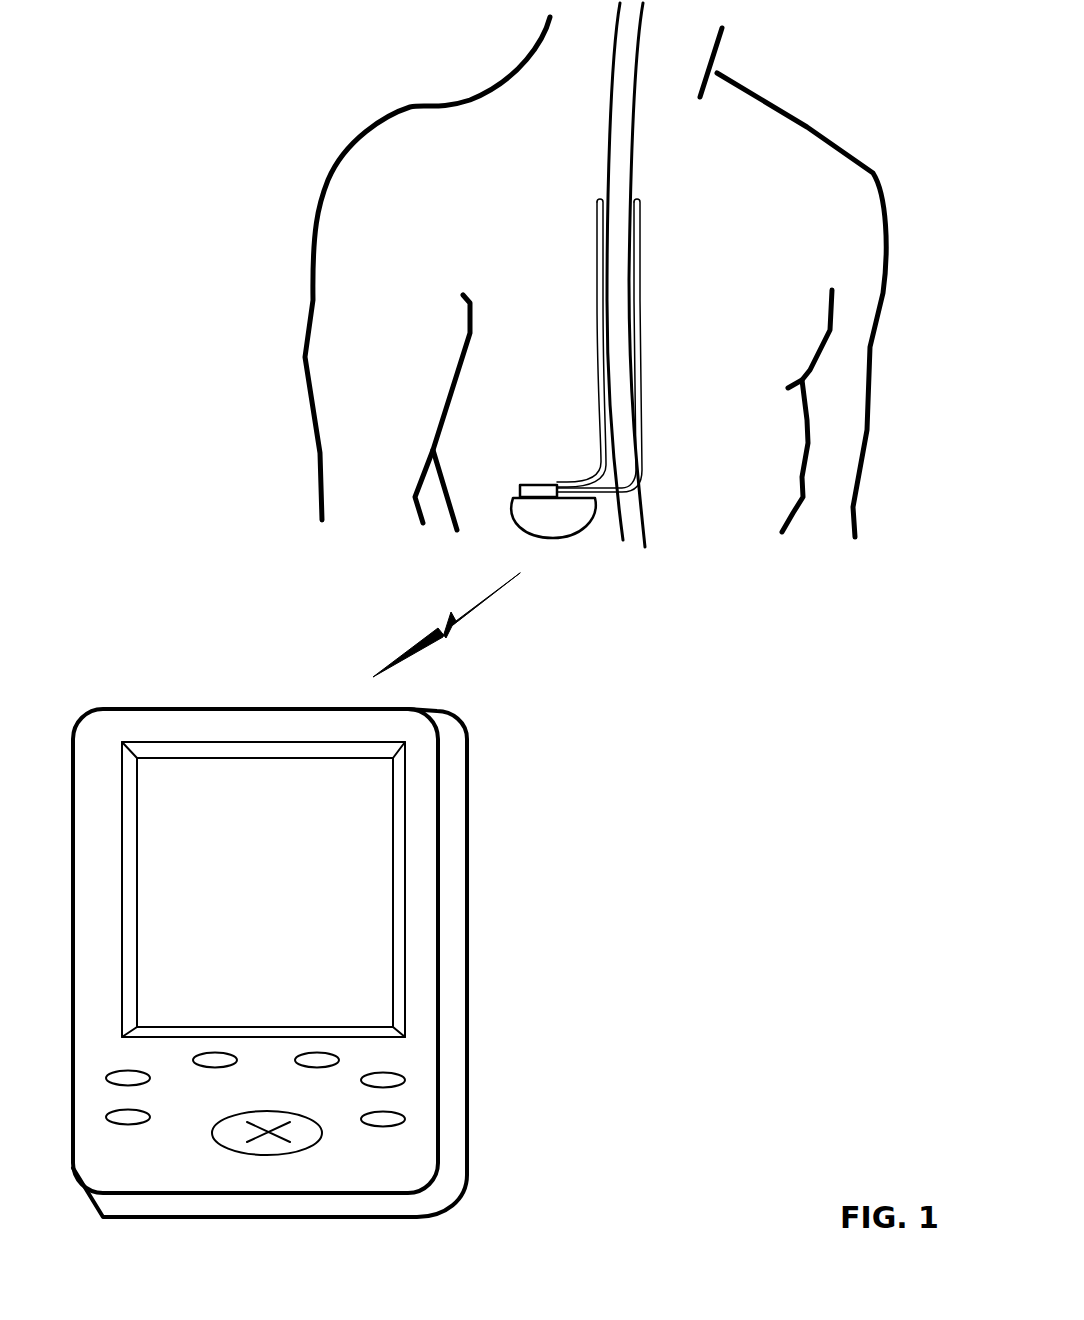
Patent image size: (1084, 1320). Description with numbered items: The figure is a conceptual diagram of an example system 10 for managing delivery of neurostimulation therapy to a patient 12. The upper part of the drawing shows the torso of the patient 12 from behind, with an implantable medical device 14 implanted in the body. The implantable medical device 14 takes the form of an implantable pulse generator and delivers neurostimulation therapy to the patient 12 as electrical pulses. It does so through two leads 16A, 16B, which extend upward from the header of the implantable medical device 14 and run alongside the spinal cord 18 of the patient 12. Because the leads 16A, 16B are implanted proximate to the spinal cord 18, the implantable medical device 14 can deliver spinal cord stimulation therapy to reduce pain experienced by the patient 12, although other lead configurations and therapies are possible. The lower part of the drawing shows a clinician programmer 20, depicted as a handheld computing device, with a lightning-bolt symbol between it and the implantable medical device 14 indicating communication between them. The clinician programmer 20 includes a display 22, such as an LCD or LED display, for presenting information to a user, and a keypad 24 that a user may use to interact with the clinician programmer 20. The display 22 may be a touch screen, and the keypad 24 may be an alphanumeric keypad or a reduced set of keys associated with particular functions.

The system 10 is at (182, 97).
The patient 12 is at (810, 110).
The implantable medical device 14 is at (510, 497).
The lead 16A is at (595, 320).
The lead 16B is at (652, 317).
The spinal cord 18 is at (642, 152).
The clinician programmer 20 is at (160, 702).
The display 22 is at (355, 892).
The keypad 24 is at (355, 1135).